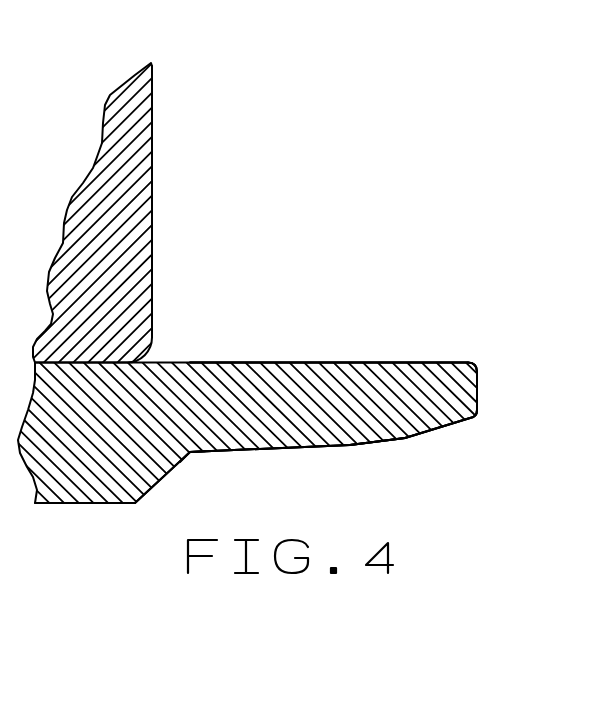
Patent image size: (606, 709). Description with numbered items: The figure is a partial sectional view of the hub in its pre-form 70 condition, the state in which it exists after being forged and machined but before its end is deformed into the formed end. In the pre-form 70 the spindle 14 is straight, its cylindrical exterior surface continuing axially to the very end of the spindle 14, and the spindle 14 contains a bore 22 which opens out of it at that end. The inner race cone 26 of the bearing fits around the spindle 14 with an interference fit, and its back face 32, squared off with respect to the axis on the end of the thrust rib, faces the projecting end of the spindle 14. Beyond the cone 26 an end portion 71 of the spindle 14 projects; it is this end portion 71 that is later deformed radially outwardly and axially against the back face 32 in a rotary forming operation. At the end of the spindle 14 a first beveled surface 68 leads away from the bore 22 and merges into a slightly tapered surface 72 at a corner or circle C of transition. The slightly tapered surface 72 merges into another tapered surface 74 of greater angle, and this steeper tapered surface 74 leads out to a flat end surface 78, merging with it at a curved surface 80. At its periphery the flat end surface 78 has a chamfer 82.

The spindle 14 is at (43, 467).
The bore 22 is at (85, 503).
The cone 26 is at (78, 215).
The back face 32 is at (152, 210).
The first beveled surface 68 is at (155, 468).
The pre-form 70 is at (357, 347).
The end portion 71 is at (290, 395).
The slightly tapered surface 72 is at (317, 447).
The tapered surface 74 is at (415, 440).
The flat end surface 78 is at (478, 405).
The curved surface 80 is at (478, 422).
The chamfer 82 is at (478, 366).
The corner or circle of transition C is at (190, 453).